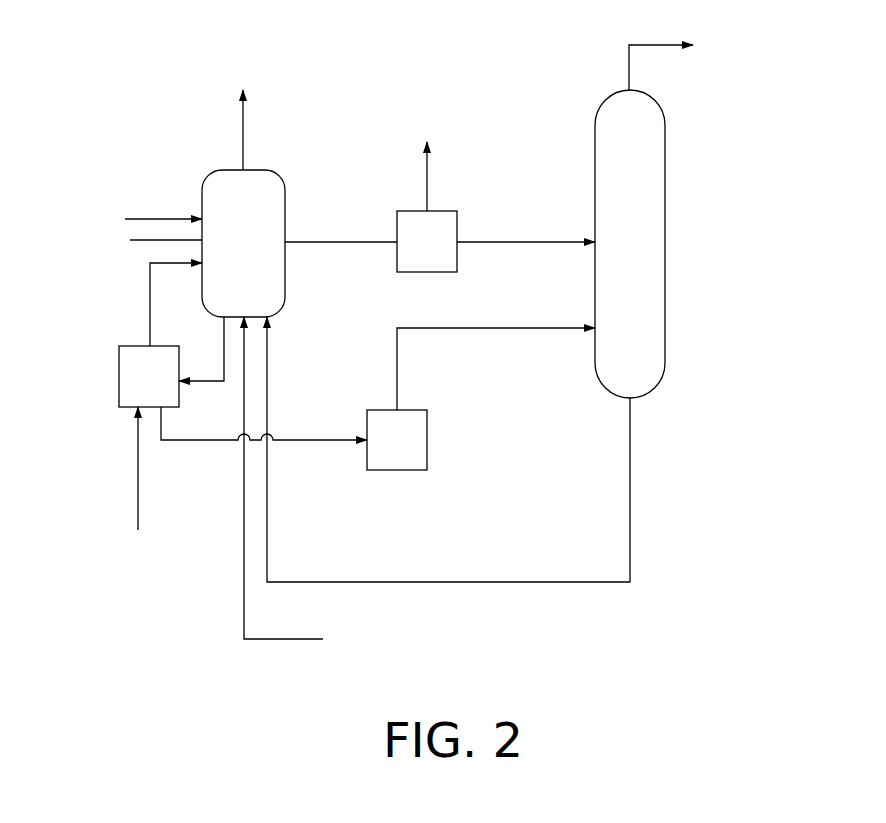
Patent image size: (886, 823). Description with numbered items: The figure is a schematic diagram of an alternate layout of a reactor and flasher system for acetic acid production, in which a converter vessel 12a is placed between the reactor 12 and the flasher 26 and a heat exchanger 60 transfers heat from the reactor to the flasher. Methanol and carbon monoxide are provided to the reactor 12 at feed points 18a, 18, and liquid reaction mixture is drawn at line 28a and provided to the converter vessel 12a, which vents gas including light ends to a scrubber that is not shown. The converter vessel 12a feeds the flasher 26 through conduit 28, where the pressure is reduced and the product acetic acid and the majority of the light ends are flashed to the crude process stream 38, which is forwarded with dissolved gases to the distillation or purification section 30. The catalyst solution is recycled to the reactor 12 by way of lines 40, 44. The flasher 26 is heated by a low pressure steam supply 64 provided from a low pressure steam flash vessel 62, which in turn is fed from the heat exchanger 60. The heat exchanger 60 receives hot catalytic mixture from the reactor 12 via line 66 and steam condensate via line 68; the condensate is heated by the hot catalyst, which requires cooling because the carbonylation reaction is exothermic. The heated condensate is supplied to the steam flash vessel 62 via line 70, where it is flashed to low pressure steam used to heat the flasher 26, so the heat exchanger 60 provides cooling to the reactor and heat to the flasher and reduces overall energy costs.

The reactor 12 is at (258, 260).
The converter vessel 12a is at (446, 210).
The carbon monoxide feed 18 is at (145, 216).
The methanol feed 18a is at (145, 243).
The flasher 26 is at (643, 251).
The conduit 28 is at (538, 240).
The liquid reaction mixture draw line 28a is at (338, 240).
The purification section 30 is at (807, 91).
The crude process stream 38 is at (628, 68).
The conduit 40 is at (460, 585).
The recycle line 44 is at (244, 598).
The heat exchanger 60 is at (119, 368).
The low pressure steam flash vessel 62 is at (397, 472).
The low pressure steam supply 64 is at (505, 330).
The line 66 is at (208, 383).
The line 68 is at (138, 487).
The line 70 is at (305, 438).